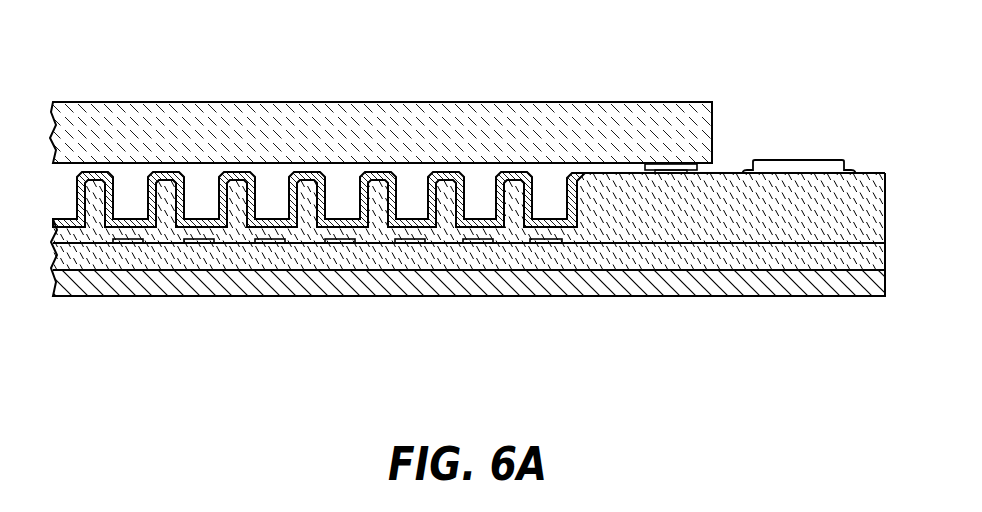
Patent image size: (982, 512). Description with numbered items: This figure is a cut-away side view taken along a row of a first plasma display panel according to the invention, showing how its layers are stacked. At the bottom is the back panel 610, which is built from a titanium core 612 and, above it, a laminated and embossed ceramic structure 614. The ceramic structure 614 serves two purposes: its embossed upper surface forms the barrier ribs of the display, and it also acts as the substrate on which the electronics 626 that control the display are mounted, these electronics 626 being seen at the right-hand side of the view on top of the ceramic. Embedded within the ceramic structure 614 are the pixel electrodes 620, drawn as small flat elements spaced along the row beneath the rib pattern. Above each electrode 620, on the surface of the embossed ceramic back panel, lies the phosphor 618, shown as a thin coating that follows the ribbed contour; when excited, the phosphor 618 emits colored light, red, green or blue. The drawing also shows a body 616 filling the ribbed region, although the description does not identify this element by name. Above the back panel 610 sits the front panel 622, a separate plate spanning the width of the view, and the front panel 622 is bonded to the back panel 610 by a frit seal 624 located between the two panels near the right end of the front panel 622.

The back panel 610 is at (400, 315).
The titanium core 612 is at (540, 294).
The laminated and embossed ceramic structure 614 is at (650, 255).
The structural layer 616 is at (307, 203).
The phosphor 618 is at (150, 197).
The pixel electrodes 620 is at (127, 244).
The front panel 622 is at (503, 118).
The frit seal 624 is at (668, 163).
The electronics 626 is at (803, 160).